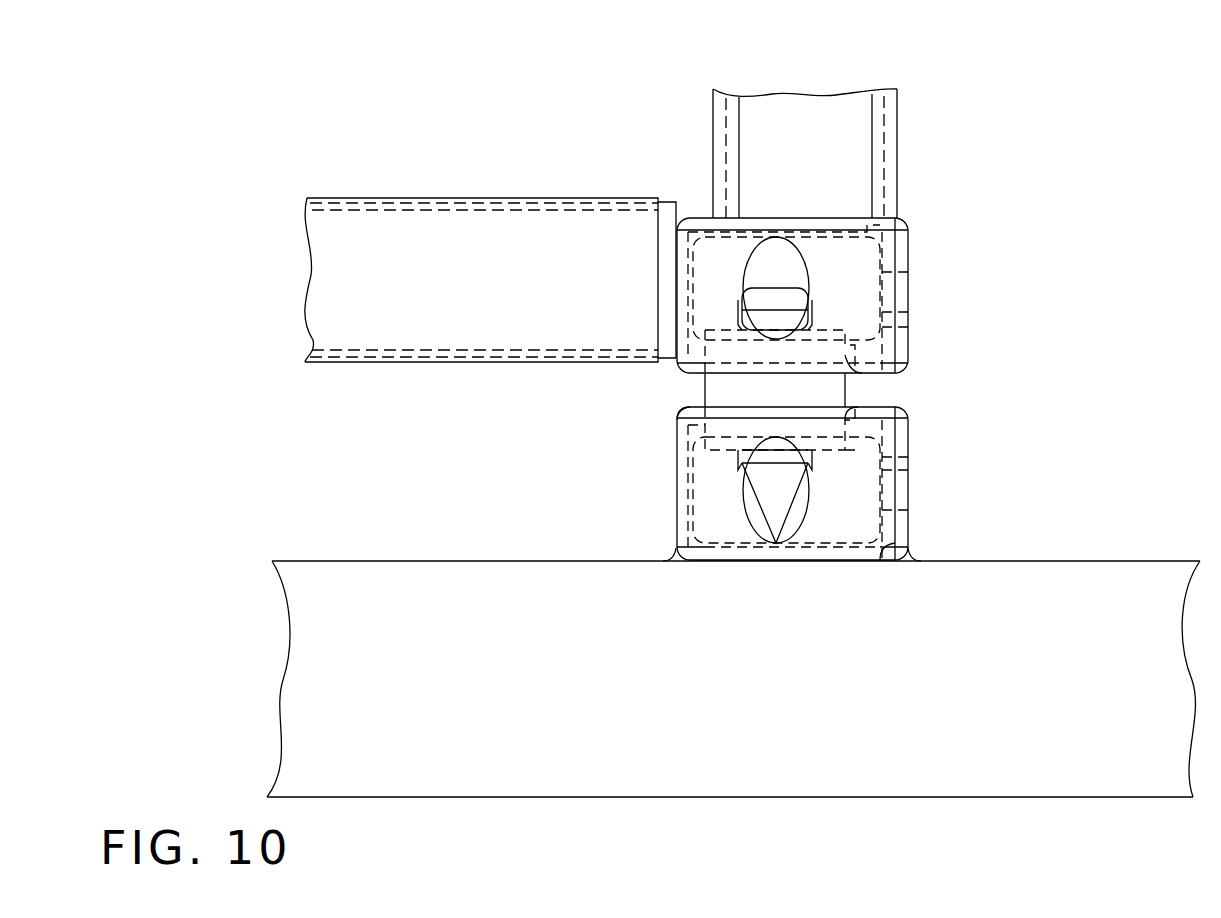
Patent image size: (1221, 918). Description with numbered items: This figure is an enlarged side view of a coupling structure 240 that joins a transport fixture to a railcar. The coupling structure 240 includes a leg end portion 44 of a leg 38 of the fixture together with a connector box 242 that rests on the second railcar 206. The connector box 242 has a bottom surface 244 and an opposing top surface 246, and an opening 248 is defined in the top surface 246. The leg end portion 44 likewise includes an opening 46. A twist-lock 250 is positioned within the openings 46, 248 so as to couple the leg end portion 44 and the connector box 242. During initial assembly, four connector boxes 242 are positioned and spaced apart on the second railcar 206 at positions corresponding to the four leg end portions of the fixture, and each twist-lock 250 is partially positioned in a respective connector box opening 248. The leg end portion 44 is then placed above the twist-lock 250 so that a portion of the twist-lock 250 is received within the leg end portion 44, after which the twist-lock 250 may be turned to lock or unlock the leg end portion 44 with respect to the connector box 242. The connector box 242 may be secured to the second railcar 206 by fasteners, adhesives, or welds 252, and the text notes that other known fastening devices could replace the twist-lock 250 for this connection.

The leg 38 is at (806, 85).
The leg end portion 44 is at (893, 260).
The opening 46 is at (850, 358).
The coupling structure 240 is at (935, 388).
The opening 248 is at (852, 410).
The connector box 242 is at (903, 437).
The bottom surface 244 is at (885, 556).
The weld 252 is at (908, 558).
The twist-lock 250 is at (707, 383).
The top surface 246 is at (700, 397).
The second railcar 206 is at (905, 760).